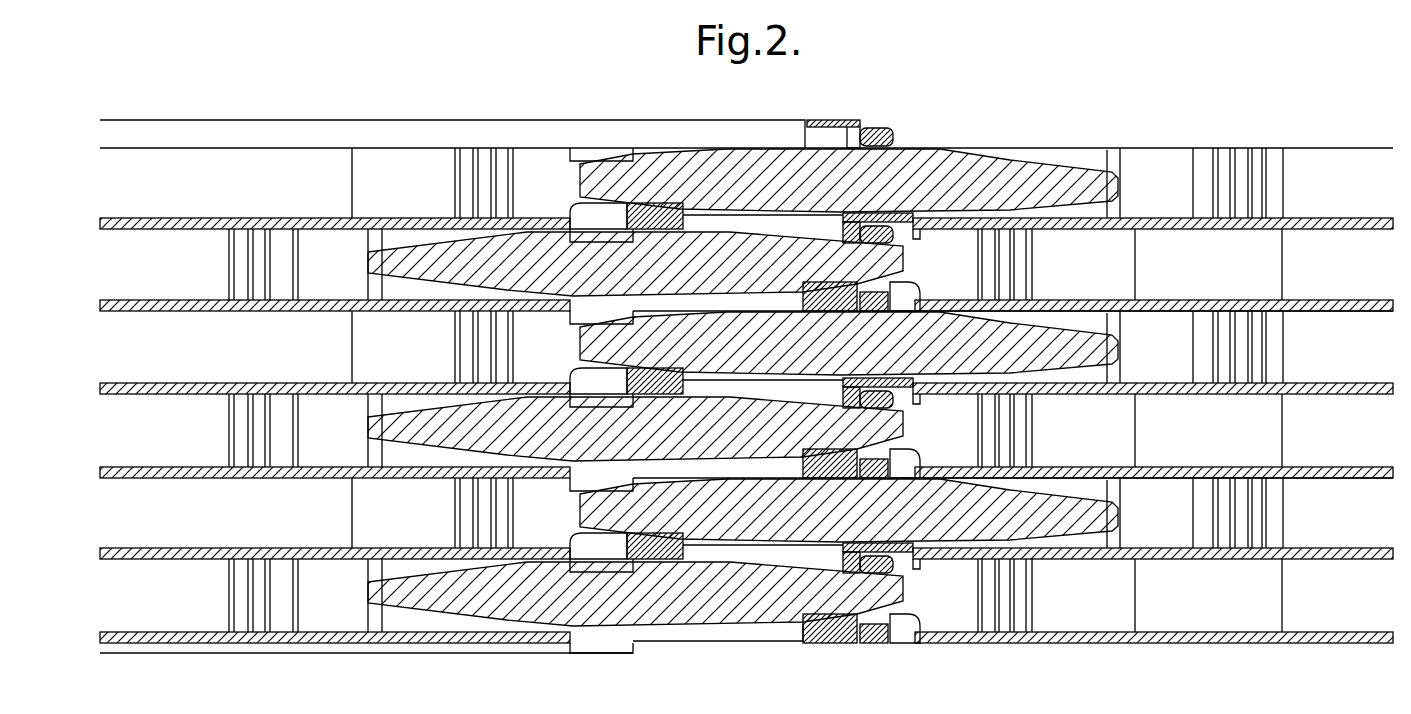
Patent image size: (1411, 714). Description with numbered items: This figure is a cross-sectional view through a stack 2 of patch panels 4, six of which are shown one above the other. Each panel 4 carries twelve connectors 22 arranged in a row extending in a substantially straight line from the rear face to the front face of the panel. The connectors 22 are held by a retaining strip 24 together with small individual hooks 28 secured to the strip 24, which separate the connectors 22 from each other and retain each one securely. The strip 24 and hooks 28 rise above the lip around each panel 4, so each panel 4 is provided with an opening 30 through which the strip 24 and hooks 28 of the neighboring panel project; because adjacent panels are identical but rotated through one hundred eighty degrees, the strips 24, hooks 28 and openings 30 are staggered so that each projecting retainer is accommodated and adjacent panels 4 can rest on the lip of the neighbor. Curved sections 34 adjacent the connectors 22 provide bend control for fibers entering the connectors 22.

The stack 2 is at (350, 102).
The patch panel 4 is at (1354, 609).
The connector 22 is at (475, 263).
The strip 24 is at (652, 213).
The hook 28 is at (905, 465).
The opening 30 is at (927, 313).
The curved section 34 is at (452, 505).